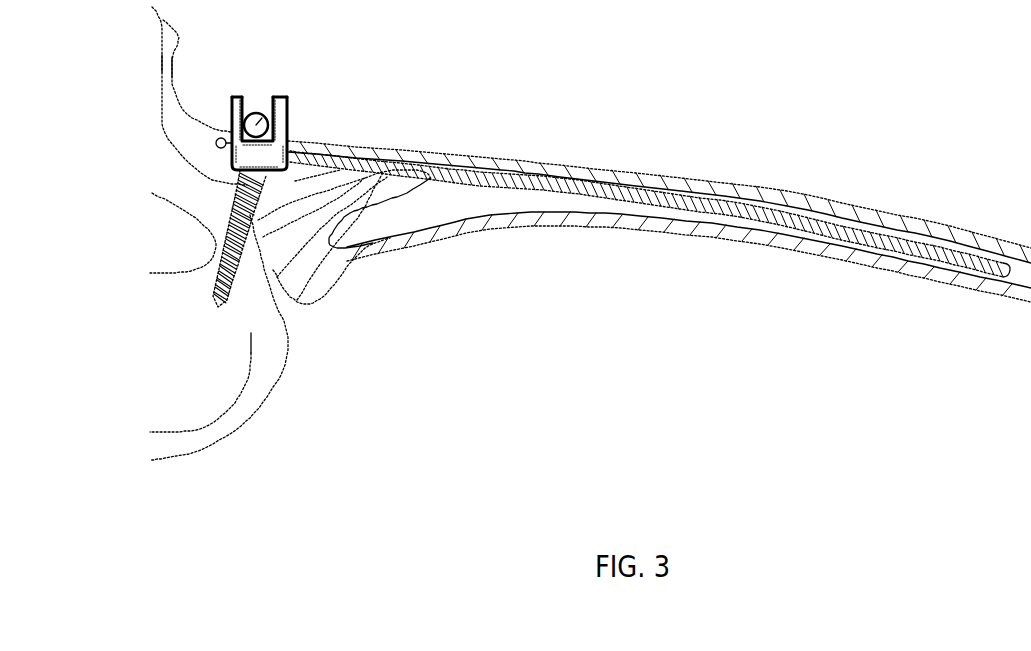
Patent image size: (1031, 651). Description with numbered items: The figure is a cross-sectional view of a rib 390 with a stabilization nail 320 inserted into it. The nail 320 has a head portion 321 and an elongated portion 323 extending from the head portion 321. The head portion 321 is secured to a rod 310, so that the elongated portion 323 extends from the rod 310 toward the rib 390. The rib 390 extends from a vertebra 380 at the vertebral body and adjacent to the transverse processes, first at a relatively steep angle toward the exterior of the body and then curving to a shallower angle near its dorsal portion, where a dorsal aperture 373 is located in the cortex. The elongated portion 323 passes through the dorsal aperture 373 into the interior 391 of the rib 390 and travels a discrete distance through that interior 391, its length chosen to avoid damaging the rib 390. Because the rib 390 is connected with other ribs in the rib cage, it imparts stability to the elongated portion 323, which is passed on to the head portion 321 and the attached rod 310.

The rod 310 is at (233, 103).
The nail 320 is at (333, 148).
The head portion 321 is at (221, 146).
The elongated portion 323 is at (537, 185).
The dorsal aperture 373 is at (455, 158).
The vertebra 380 is at (250, 418).
The rib 390 is at (705, 243).
The interior of rib 391 is at (370, 230).